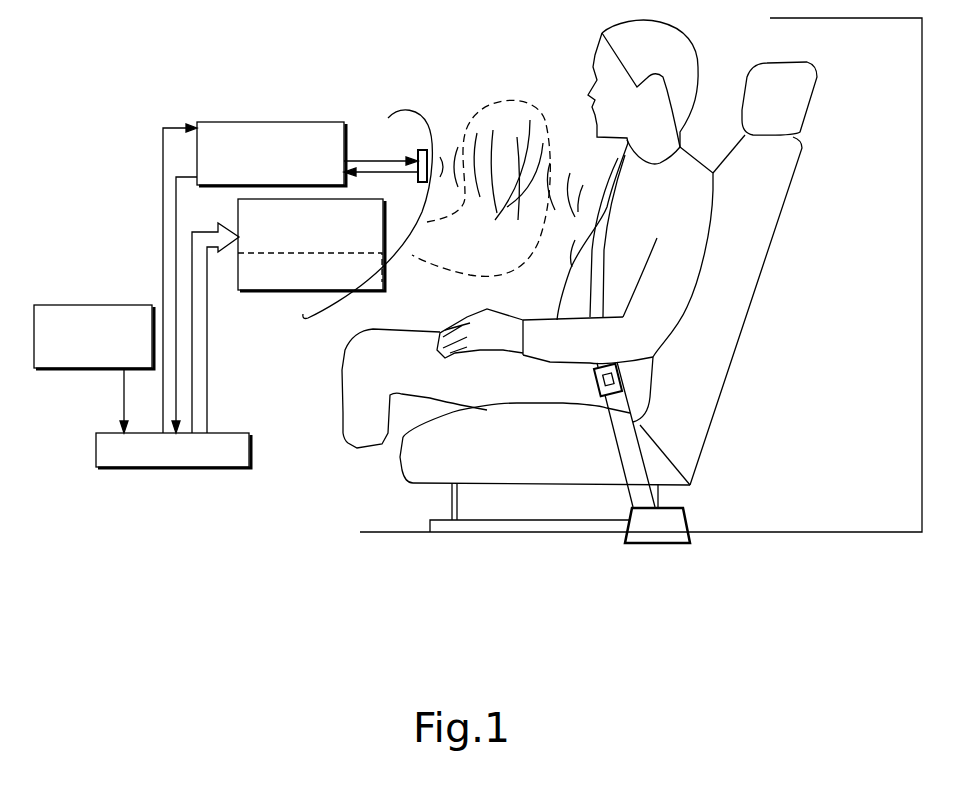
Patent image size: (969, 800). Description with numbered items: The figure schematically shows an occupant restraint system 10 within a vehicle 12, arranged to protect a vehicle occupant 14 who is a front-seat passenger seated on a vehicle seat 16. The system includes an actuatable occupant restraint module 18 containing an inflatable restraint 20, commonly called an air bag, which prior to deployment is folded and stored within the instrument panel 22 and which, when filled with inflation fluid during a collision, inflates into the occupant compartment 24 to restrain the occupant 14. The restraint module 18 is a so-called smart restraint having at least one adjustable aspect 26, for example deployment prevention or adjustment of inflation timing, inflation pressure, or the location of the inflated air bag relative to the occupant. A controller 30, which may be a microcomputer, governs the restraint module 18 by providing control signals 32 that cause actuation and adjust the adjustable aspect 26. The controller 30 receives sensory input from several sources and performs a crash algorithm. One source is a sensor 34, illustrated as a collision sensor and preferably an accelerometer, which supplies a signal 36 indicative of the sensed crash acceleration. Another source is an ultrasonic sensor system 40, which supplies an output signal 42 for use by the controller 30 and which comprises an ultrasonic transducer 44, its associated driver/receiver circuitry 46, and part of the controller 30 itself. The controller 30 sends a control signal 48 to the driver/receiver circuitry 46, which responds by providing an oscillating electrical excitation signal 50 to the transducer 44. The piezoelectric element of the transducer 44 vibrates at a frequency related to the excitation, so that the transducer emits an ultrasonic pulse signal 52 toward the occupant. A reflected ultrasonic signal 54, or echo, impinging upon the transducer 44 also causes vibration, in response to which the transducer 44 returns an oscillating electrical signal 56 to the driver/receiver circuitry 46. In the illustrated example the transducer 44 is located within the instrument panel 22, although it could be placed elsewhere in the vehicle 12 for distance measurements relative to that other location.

The occupant restraint system 10 is at (162, 93).
The vehicle 12 is at (373, 530).
The vehicle occupant 14 is at (675, 42).
The vehicle seat 16 is at (693, 438).
The occupant restraint module 18 is at (238, 207).
The inflatable restraint 20 is at (470, 120).
The instrument panel 22 is at (372, 124).
The occupant compartment 24 is at (576, 97).
The adjustable aspect 26 is at (268, 290).
The controller 30 is at (235, 418).
The control signals 32 is at (207, 352).
The sensor 34 is at (88, 305).
The signal 36 is at (124, 395).
The ultrasonic sensor system 40 is at (340, 108).
The output signal 42 is at (176, 205).
The ultrasonic transducer 44 is at (418, 150).
The driver/receiver circuitry 46 is at (257, 122).
The control signal 48 is at (163, 247).
The electrical excitation signal 50 is at (380, 160).
The ultrasonic pulse signal 52 is at (512, 140).
The ultrasonic signal 54 is at (497, 207).
The oscillating electrical signal 56 is at (385, 172).